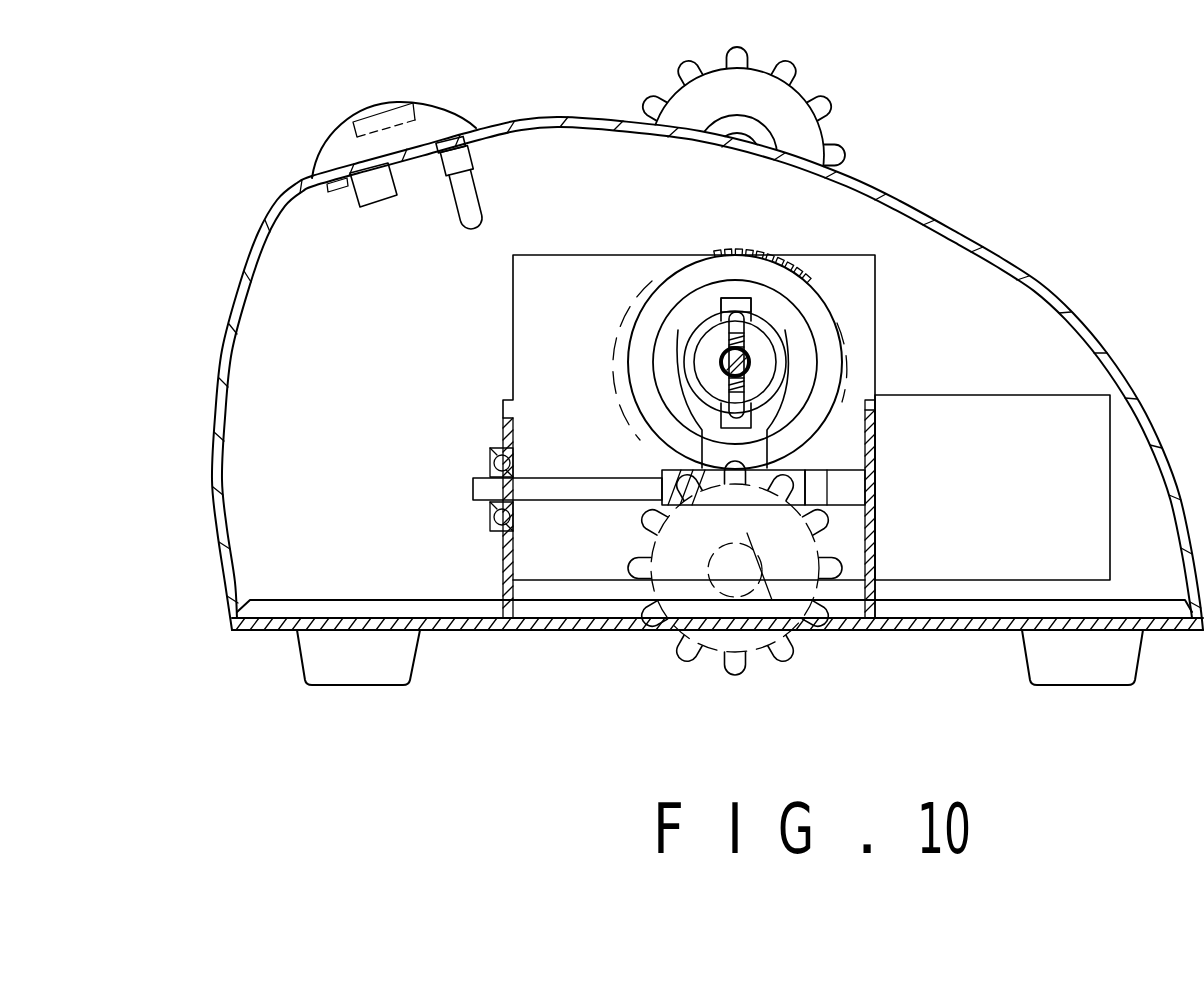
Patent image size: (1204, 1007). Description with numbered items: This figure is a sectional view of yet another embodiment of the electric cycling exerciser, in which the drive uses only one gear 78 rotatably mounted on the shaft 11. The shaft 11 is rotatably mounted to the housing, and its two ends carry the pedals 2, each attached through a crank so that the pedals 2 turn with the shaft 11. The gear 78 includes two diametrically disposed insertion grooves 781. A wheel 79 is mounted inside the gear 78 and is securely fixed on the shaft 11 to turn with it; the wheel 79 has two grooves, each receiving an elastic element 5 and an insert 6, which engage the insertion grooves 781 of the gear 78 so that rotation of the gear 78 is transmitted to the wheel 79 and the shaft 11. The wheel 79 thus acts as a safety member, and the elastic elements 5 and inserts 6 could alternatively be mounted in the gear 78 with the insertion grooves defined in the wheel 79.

The pedal 2 is at (800, 672).
The elastic element 5 is at (714, 310).
The insert 6 is at (727, 317).
The shaft 11 is at (750, 357).
The gear 78 is at (757, 325).
The insertion groove 781 is at (745, 306).
The wheel 79 is at (767, 357).